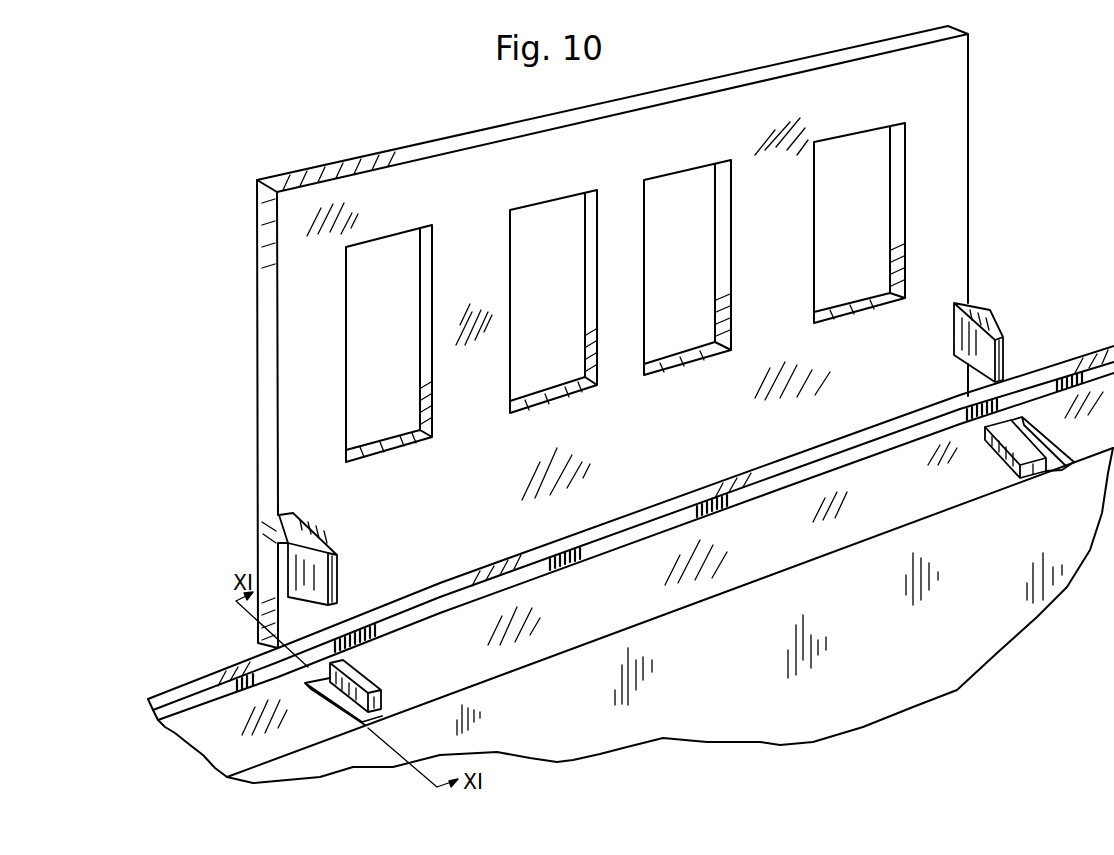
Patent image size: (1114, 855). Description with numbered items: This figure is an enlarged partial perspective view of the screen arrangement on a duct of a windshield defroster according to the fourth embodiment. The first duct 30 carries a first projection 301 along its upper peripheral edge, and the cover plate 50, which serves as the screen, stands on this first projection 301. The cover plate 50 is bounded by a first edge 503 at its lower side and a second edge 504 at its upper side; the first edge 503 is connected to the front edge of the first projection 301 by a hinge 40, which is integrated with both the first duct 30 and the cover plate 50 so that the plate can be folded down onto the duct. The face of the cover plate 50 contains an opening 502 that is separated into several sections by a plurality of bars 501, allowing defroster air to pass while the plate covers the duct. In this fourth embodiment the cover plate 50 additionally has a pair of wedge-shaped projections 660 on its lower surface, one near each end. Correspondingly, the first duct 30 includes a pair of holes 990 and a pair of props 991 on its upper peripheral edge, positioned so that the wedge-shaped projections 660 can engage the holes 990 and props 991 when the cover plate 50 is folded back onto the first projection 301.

The first duct 30 is at (211, 735).
The hinge 40 is at (266, 652).
The cover plate 50 is at (943, 89).
The first projection 301 is at (1037, 400).
The bars 501 is at (467, 272).
The opening 502 is at (890, 262).
The first edge 503 is at (825, 437).
The second edge 504 is at (732, 86).
The projections 660 is at (318, 578).
The holes 990 is at (347, 703).
The props 991 is at (363, 681).